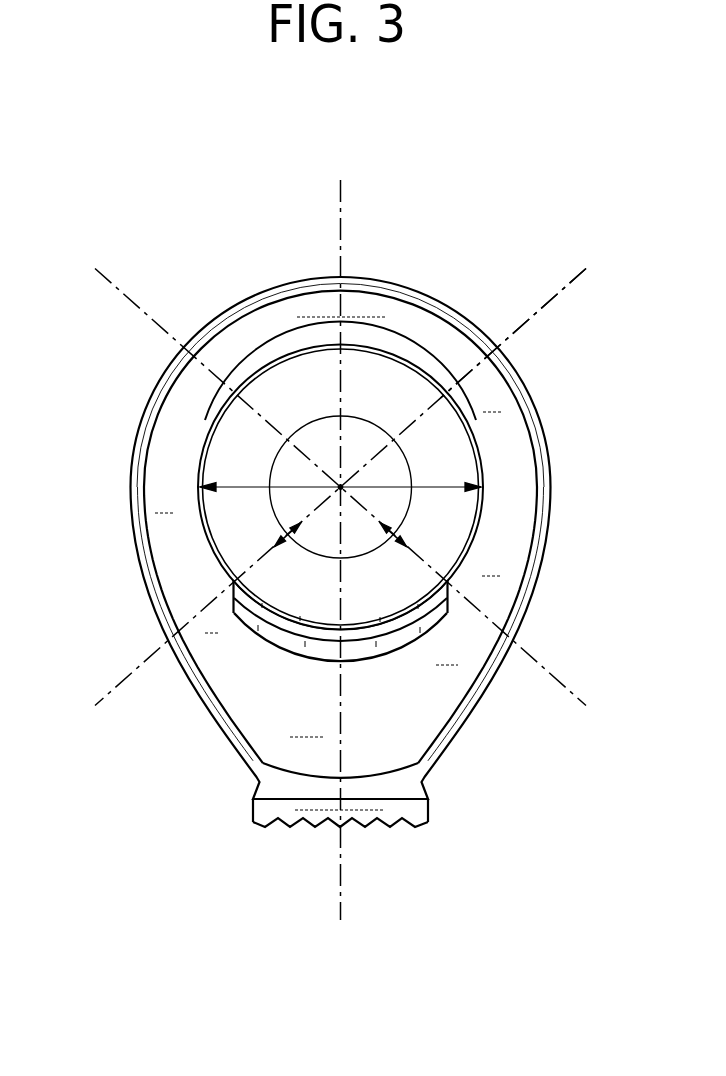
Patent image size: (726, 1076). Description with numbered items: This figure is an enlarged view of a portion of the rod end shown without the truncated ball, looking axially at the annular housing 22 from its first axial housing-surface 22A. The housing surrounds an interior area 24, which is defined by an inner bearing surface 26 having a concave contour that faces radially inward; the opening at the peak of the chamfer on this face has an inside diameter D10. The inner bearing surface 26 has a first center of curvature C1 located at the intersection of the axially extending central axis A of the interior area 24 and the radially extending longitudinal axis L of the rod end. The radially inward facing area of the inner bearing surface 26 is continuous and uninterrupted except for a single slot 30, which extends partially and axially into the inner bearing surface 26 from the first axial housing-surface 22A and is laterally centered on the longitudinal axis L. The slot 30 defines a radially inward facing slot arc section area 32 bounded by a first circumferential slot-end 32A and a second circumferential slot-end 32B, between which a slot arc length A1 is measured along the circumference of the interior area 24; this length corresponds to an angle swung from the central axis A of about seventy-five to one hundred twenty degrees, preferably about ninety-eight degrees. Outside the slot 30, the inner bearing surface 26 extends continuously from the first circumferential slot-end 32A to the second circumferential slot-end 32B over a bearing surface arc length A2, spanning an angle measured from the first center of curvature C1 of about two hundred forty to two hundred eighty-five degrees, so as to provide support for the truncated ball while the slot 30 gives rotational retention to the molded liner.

The annular housing 22 is at (152, 390).
The first axial housing-surface 22A is at (268, 337).
The interior area 24 is at (249, 481).
The inner bearing surface 26 is at (468, 468).
The slot 30 is at (366, 649).
The slot arc section area 32 is at (301, 628).
The first circumferential slot-end 32A is at (236, 580).
The second circumferential slot-end 32B is at (446, 580).
The inside diameter D10 is at (262, 460).
The first center of curvature C1 is at (341, 487).
The central axis A is at (341, 487).
The slot arc length A1 is at (318, 624).
The bearing surface arc length A2 is at (364, 357).
The longitudinal axis L is at (341, 705).